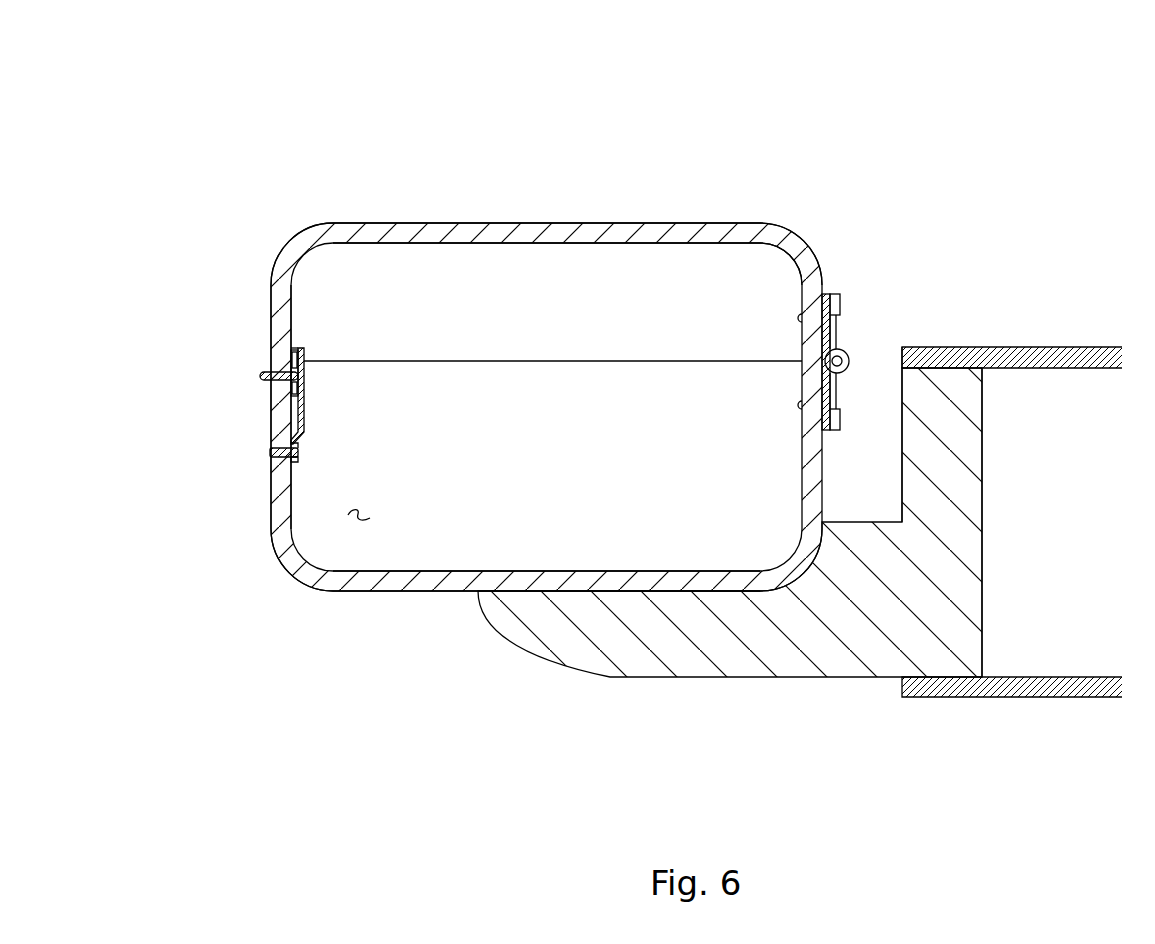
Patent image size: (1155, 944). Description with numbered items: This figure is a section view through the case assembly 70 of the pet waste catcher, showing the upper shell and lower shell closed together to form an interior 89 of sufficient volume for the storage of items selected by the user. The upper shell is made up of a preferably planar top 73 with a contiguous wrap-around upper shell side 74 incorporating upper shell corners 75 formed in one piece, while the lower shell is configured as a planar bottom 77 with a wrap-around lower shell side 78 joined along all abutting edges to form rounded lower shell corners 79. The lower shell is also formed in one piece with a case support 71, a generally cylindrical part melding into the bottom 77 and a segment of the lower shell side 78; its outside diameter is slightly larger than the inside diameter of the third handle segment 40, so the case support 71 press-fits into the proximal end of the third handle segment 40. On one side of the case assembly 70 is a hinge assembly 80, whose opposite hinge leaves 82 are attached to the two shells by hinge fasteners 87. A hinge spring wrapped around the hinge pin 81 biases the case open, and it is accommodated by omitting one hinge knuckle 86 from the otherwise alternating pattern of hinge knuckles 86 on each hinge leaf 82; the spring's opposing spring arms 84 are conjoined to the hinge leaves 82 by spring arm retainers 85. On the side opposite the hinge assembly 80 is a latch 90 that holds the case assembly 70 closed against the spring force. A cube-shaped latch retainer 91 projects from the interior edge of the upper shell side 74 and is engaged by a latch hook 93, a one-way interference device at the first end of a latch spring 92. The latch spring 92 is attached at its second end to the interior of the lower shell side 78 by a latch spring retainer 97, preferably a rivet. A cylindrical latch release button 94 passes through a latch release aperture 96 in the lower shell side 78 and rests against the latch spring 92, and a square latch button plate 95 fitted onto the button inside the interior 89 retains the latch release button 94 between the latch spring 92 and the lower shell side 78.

The case assembly 70 is at (249, 125).
The case support 71 is at (628, 678).
The top 73 is at (562, 222).
The upper shell side 74 is at (272, 272).
The upper shell corners 75 is at (793, 234).
The bottom 77 is at (415, 592).
The lower shell side 78 is at (271, 487).
The lower shell corners 79 is at (280, 557).
The hinge assembly 80 is at (962, 270).
The hinge pin 81 is at (850, 359).
The hinge leaves 82 is at (826, 293).
The spring arms 84 is at (838, 402).
The spring arm retainer 85 is at (839, 300).
The hinge knuckles 86 is at (843, 371).
The hinge fasteners 87 is at (772, 258).
The interior 89 is at (350, 516).
The latch 90 is at (190, 392).
The latch retainer 91 is at (291, 350).
The latch spring 92 is at (300, 411).
The latch hook 93 is at (290, 345).
The latch release button 94 is at (260, 376).
The latch button plate 95 is at (292, 362).
The latch release aperture 96 is at (292, 384).
The latch spring retainer 97 is at (270, 452).
The third handle segment 40 is at (955, 698).